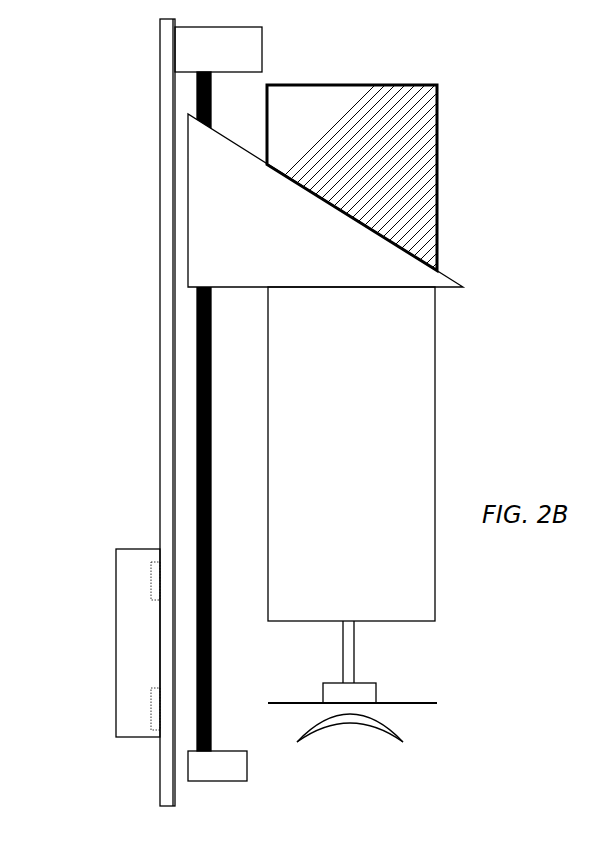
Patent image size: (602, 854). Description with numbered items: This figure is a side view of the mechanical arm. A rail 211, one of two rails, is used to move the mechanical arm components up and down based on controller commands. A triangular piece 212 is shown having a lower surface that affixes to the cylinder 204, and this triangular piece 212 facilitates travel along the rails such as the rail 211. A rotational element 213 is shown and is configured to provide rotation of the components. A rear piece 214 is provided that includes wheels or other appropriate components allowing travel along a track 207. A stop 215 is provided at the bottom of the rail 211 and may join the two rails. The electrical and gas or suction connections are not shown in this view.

The cylinder 204 is at (352, 514).
The track 207 is at (128, 600).
The rail 211 is at (193, 360).
The triangular piece 212 is at (325, 200).
The rotational element 213 is at (355, 240).
The rear piece 214 is at (154, 222).
The stop 215 is at (233, 775).